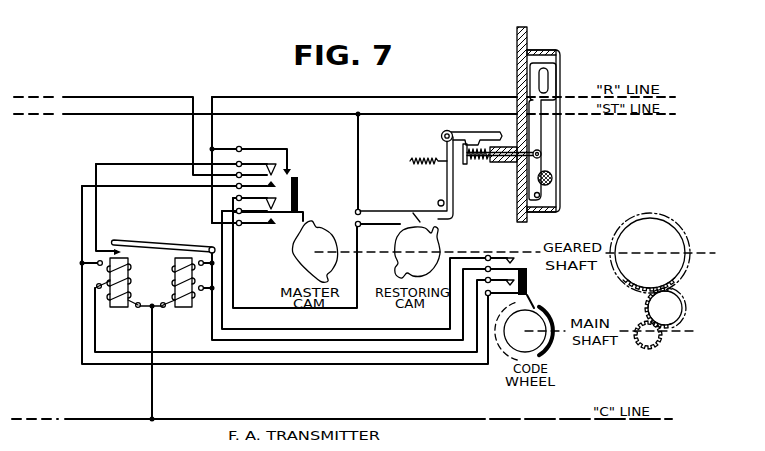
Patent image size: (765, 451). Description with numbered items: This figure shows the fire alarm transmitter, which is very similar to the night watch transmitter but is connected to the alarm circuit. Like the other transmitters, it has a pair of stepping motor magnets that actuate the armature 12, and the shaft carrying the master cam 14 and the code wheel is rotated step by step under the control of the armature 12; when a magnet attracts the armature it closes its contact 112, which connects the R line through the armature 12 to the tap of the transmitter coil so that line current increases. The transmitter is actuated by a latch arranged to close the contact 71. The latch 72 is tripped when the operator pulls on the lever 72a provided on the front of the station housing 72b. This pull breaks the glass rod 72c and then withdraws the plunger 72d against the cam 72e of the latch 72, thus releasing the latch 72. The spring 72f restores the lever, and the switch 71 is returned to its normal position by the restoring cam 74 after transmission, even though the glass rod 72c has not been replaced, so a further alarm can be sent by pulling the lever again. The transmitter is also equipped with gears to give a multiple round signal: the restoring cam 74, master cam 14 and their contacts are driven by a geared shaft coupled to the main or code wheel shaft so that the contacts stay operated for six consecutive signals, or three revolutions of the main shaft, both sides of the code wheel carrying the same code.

The armature 12 is at (166, 243).
The contact 112 is at (115, 250).
The master cam 14 is at (296, 262).
The restoring cam 74 is at (393, 266).
The contact 71 is at (396, 222).
The latch 72 is at (447, 180).
The lever 72a is at (541, 133).
The station housing 72b is at (524, 40).
The glass rod 72c is at (552, 180).
The plunger 72d is at (496, 176).
The cam 72e is at (479, 141).
The spring 72f is at (508, 170).